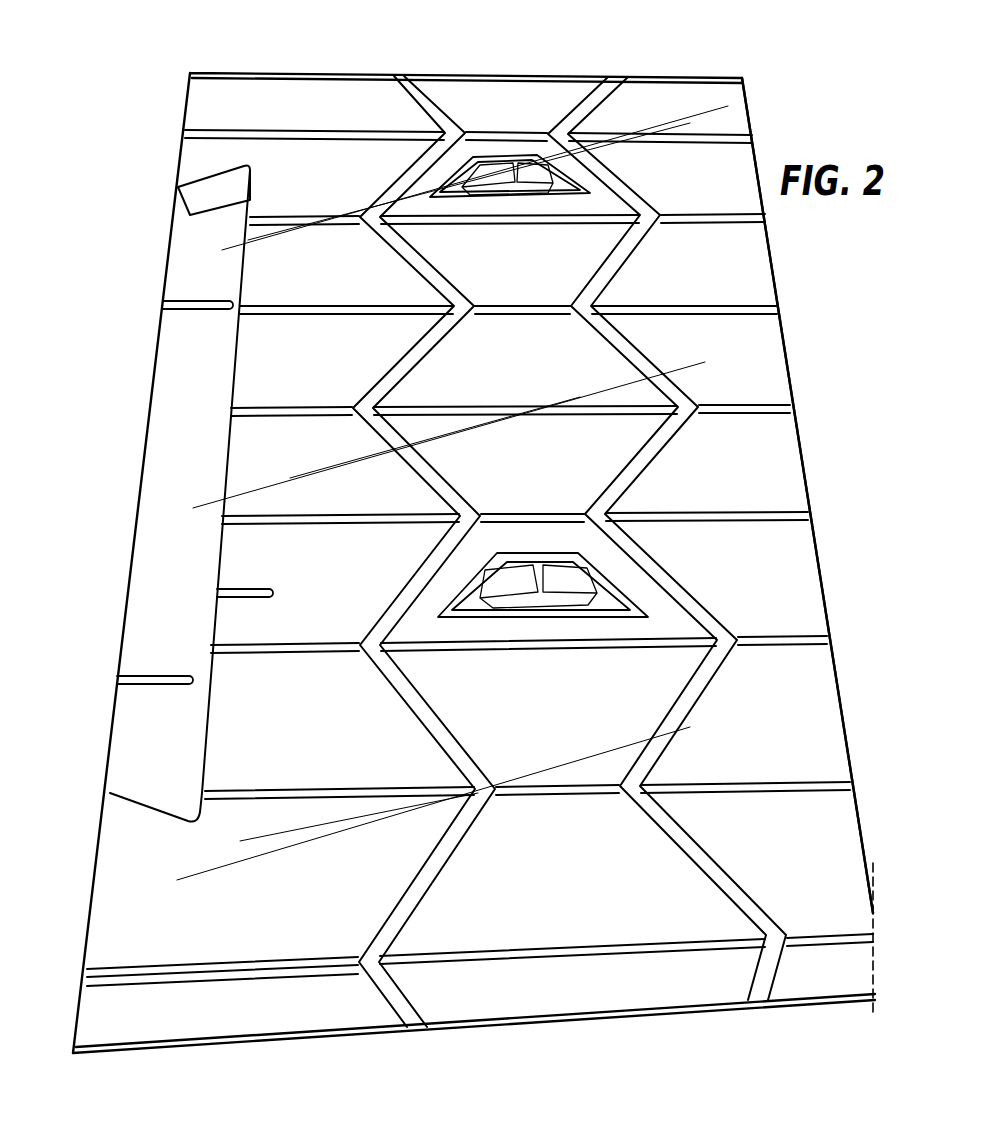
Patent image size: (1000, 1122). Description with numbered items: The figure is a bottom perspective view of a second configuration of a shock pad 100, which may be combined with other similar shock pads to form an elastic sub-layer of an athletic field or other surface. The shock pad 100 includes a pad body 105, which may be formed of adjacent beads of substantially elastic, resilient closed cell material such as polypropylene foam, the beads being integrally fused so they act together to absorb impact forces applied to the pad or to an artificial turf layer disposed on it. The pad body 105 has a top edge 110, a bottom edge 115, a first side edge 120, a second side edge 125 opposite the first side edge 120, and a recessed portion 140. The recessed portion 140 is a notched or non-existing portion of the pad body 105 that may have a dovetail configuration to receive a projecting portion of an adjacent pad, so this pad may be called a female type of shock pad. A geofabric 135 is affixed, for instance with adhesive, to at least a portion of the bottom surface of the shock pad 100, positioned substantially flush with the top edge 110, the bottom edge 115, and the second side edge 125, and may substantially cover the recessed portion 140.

The shock pad 100 is at (772, 72).
The pad body 105 is at (787, 362).
The top edge 110 is at (420, 62).
The bottom edge 115 is at (523, 1030).
The first side edge 120 is at (108, 502).
The second side edge 125 is at (842, 636).
The geofabric 135 is at (162, 302).
The recessed portion 140 is at (147, 631).